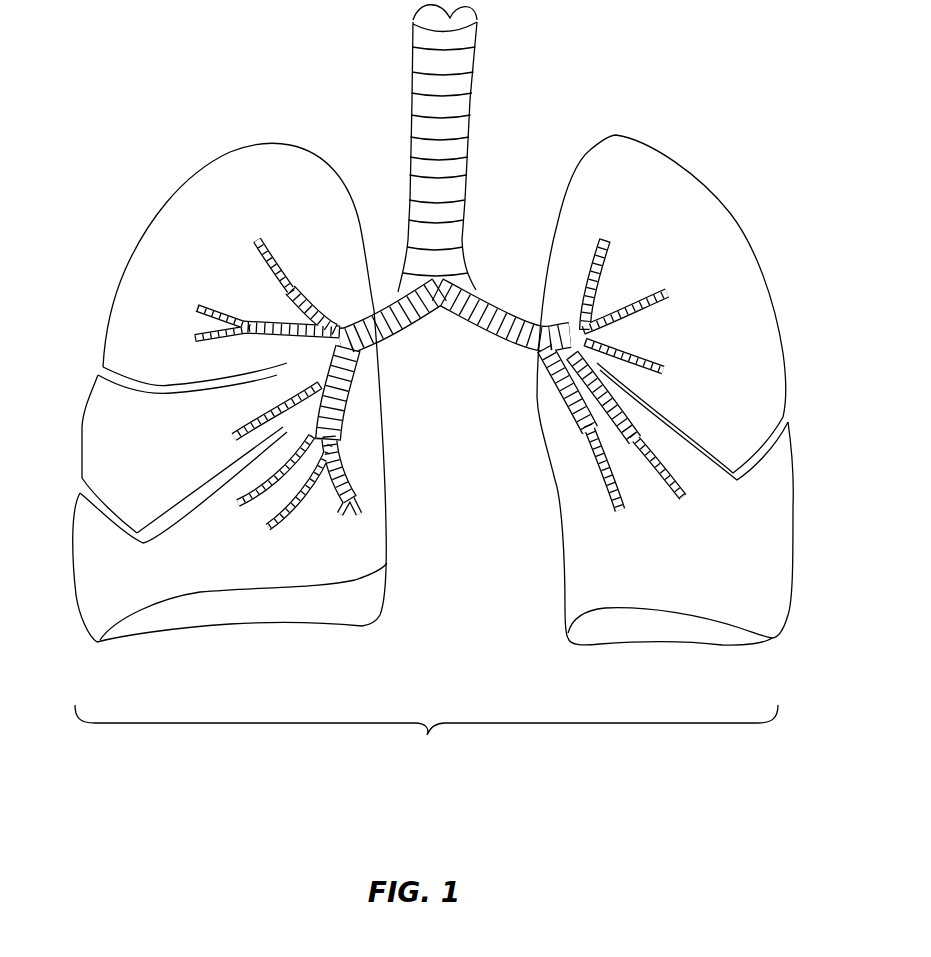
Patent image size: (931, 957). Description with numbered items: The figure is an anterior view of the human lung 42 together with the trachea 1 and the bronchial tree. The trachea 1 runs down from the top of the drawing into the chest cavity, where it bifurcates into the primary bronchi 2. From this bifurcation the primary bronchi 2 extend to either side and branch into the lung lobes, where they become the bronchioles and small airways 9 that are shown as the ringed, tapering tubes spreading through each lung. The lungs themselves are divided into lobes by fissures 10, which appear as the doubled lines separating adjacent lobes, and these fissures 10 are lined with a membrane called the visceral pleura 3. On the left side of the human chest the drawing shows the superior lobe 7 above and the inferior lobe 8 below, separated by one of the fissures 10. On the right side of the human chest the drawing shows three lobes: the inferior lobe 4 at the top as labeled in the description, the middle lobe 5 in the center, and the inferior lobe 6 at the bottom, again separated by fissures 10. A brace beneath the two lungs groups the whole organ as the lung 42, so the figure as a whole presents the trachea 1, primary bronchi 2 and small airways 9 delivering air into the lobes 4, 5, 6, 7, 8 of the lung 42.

The trachea 1 is at (473, 88).
The primary bronchi 2 is at (493, 347).
The visceral pleura 3 is at (697, 390).
The inferior lobe 4 is at (205, 390).
The middle lobe 5 is at (128, 443).
The inferior lobe 6 is at (120, 577).
The superior lobe 7 is at (718, 305).
The inferior lobe 8 is at (757, 537).
The bronchioles and small airways 9 is at (283, 290).
The fissures 10 is at (167, 383).
The lung 42 is at (426, 737).